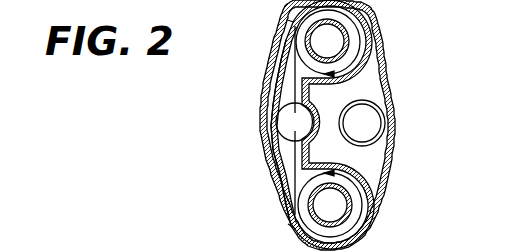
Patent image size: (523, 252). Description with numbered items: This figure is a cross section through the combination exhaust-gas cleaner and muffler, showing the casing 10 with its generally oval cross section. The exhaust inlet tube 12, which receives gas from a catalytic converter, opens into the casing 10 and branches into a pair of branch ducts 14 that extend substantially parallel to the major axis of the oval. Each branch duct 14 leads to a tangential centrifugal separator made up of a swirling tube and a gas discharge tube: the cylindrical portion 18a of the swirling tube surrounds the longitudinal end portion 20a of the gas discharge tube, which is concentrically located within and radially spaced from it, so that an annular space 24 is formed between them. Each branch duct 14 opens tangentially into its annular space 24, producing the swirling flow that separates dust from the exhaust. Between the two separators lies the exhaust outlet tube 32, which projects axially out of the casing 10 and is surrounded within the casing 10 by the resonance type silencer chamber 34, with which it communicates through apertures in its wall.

The casing 10 is at (386, 63).
The exhaust inlet tube 12 is at (277, 125).
The branch ducts 14 is at (279, 79).
The cylindrical portion 18a is at (378, 69).
The longitudinal end portion 20a is at (348, 34).
The annular space 24 is at (289, 18).
The exhaust outlet tube 32 is at (384, 106).
The resonance type silencer chamber 34 is at (373, 161).